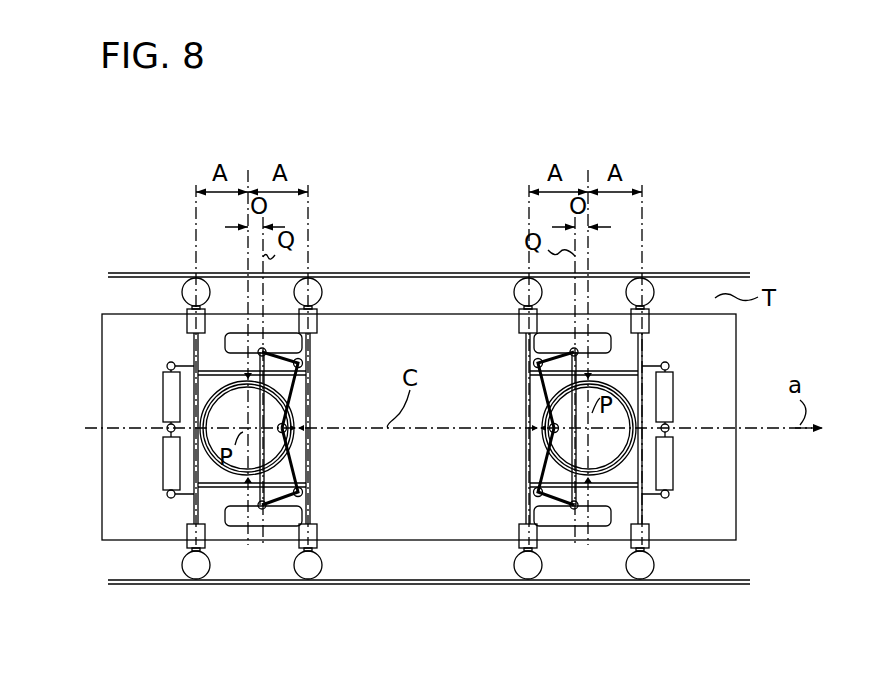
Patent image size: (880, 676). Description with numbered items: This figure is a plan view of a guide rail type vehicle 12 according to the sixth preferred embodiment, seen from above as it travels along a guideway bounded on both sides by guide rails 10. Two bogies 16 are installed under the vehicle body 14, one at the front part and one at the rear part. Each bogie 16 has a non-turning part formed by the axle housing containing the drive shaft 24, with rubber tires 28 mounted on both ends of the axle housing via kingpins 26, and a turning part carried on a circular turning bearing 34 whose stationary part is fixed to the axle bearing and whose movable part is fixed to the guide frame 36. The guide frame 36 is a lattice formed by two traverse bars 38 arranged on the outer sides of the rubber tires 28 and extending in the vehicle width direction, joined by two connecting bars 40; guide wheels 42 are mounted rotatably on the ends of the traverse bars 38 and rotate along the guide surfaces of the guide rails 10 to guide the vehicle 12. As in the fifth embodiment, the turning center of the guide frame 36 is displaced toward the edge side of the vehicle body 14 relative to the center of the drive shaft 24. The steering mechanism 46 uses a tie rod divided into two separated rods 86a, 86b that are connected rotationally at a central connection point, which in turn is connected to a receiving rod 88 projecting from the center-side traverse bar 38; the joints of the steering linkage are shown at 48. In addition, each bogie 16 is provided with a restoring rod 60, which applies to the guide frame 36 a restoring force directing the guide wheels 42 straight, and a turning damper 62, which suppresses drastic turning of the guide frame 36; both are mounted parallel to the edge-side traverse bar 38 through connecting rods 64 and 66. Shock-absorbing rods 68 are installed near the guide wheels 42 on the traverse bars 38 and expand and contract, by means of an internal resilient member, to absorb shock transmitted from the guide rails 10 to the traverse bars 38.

The guide rail 10 is at (360, 272).
The vehicle 12 is at (438, 296).
The vehicle body 14 is at (380, 312).
The bogie 16 is at (610, 298).
The drive shaft 24 is at (176, 424).
The kingpin 26 is at (258, 350).
The rubber tire 28 is at (234, 522).
The circular turning bearing 34 is at (200, 394).
The guide frame 36 is at (520, 452).
The traverse bar 38 is at (190, 342).
The connecting bar 40 is at (215, 371).
The guide wheel 42 is at (190, 284).
The steering mechanism 46 is at (535, 397).
The pin joint 48 is at (540, 355).
The restoring rod 60 is at (163, 468).
The turning damper 62 is at (163, 377).
The connecting rod 64 is at (168, 497).
The connecting rod 66 is at (166, 366).
The shock-absorbing rod 68 is at (188, 540).
The separated rod 86a is at (305, 470).
The separated rod 86b is at (305, 383).
The receiving rod 88 is at (290, 426).